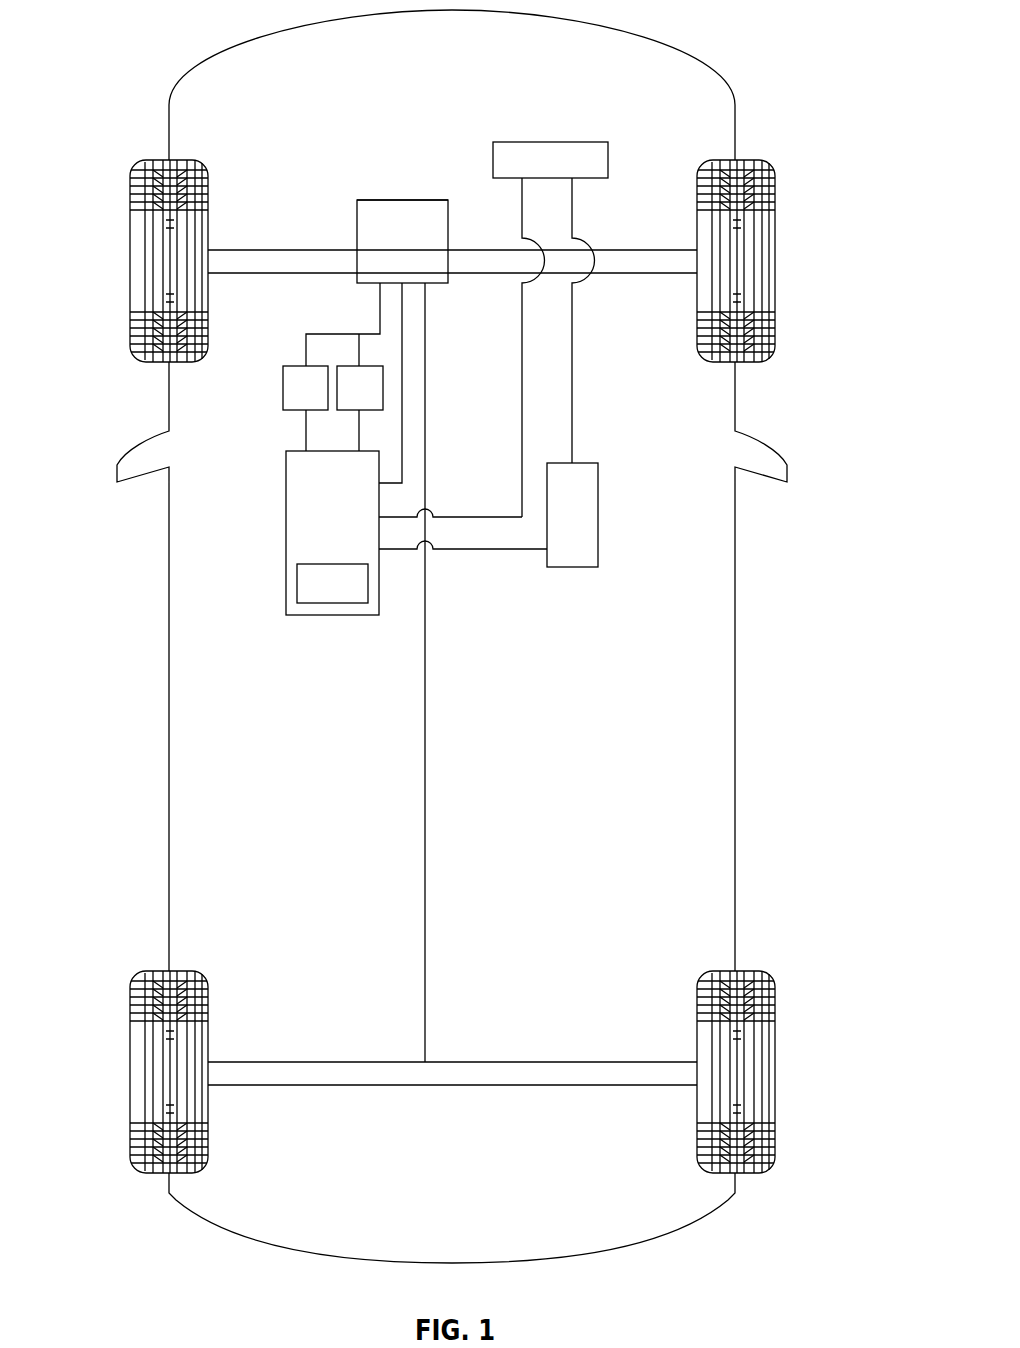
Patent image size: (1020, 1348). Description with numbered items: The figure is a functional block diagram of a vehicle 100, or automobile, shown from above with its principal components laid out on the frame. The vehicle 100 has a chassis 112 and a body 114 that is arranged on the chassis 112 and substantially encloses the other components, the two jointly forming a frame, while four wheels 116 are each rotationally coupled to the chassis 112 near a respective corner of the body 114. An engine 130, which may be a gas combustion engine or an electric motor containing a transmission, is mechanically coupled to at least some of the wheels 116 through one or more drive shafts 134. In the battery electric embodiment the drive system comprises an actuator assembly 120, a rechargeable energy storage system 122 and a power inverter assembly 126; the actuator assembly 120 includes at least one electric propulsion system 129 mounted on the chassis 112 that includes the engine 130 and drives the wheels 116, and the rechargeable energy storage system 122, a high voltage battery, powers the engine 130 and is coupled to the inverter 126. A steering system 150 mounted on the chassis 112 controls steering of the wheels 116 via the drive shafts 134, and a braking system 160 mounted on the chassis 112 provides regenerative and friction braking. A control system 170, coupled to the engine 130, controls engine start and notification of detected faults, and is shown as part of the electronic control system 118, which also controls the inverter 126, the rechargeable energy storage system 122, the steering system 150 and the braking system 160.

The vehicle 100 is at (154, 27).
The chassis 112 is at (425, 757).
The body 114 is at (169, 648).
The wheels 116 is at (130, 262).
The electronic control system 118 is at (286, 534).
The actuator assembly 120 is at (450, 308).
The rechargeable energy storage system 122 is at (598, 497).
The power inverter assembly 126 is at (493, 160).
The electric propulsion system 129 is at (440, 200).
The engine 130 is at (378, 228).
The drive shafts 134 is at (243, 275).
The steering system 150 is at (283, 388).
The braking system 160 is at (350, 366).
The control system 170 is at (297, 584).